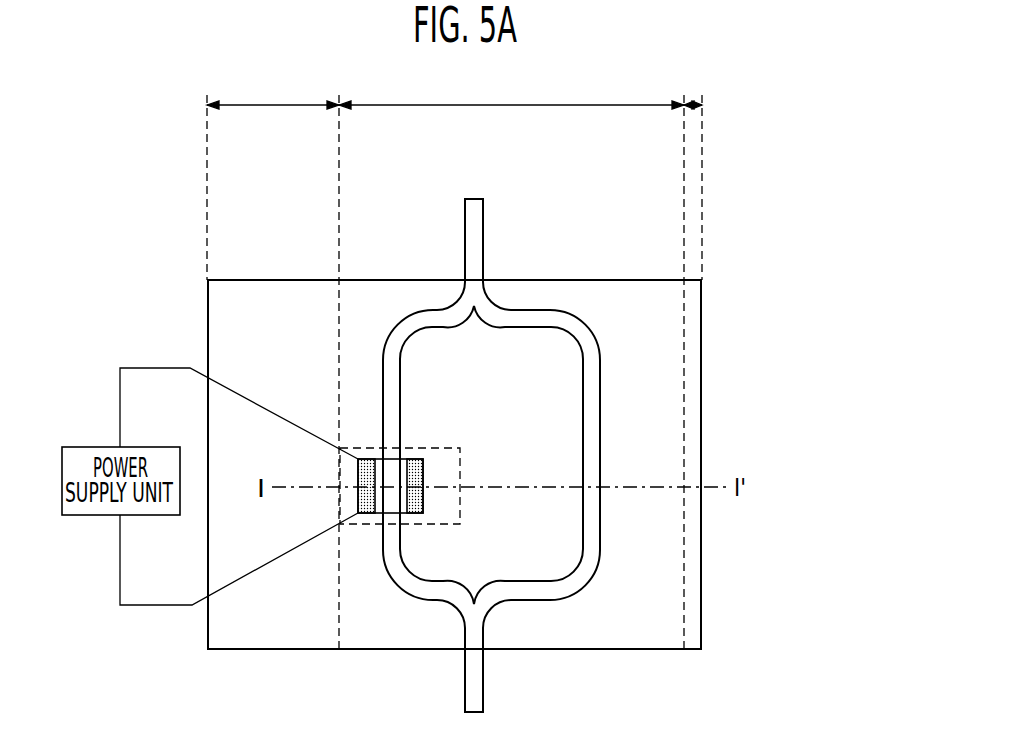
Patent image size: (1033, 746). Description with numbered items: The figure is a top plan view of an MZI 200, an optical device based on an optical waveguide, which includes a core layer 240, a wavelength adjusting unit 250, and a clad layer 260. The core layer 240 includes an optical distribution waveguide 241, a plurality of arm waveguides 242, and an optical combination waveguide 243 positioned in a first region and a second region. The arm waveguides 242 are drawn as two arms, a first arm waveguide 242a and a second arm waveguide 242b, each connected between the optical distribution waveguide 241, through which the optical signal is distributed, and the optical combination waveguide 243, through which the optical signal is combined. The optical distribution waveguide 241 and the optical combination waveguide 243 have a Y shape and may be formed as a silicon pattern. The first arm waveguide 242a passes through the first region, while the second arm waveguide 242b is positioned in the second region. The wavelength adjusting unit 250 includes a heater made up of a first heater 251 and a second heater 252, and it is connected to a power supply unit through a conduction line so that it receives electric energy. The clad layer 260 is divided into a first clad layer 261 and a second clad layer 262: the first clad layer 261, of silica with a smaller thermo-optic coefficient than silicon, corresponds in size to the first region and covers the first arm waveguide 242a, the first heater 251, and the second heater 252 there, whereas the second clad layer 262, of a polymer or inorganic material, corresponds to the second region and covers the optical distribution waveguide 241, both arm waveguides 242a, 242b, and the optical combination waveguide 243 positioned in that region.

The MZI 200 is at (836, 68).
The core layer 240 is at (813, 684).
The optical distribution waveguide 241 is at (483, 238).
The arm waveguides 242 is at (593, 455).
The first arm waveguide 242a is at (583, 358).
The second arm waveguide 242b is at (600, 430).
The optical combination waveguide 243 is at (483, 673).
The wavelength adjusting unit 250 is at (379, 591).
The first heater 251 is at (367, 513).
The second heater 252 is at (415, 513).
The clad layer 260 is at (228, 143).
The first clad layer 261 is at (240, 300).
The second clad layer 262 is at (422, 290).